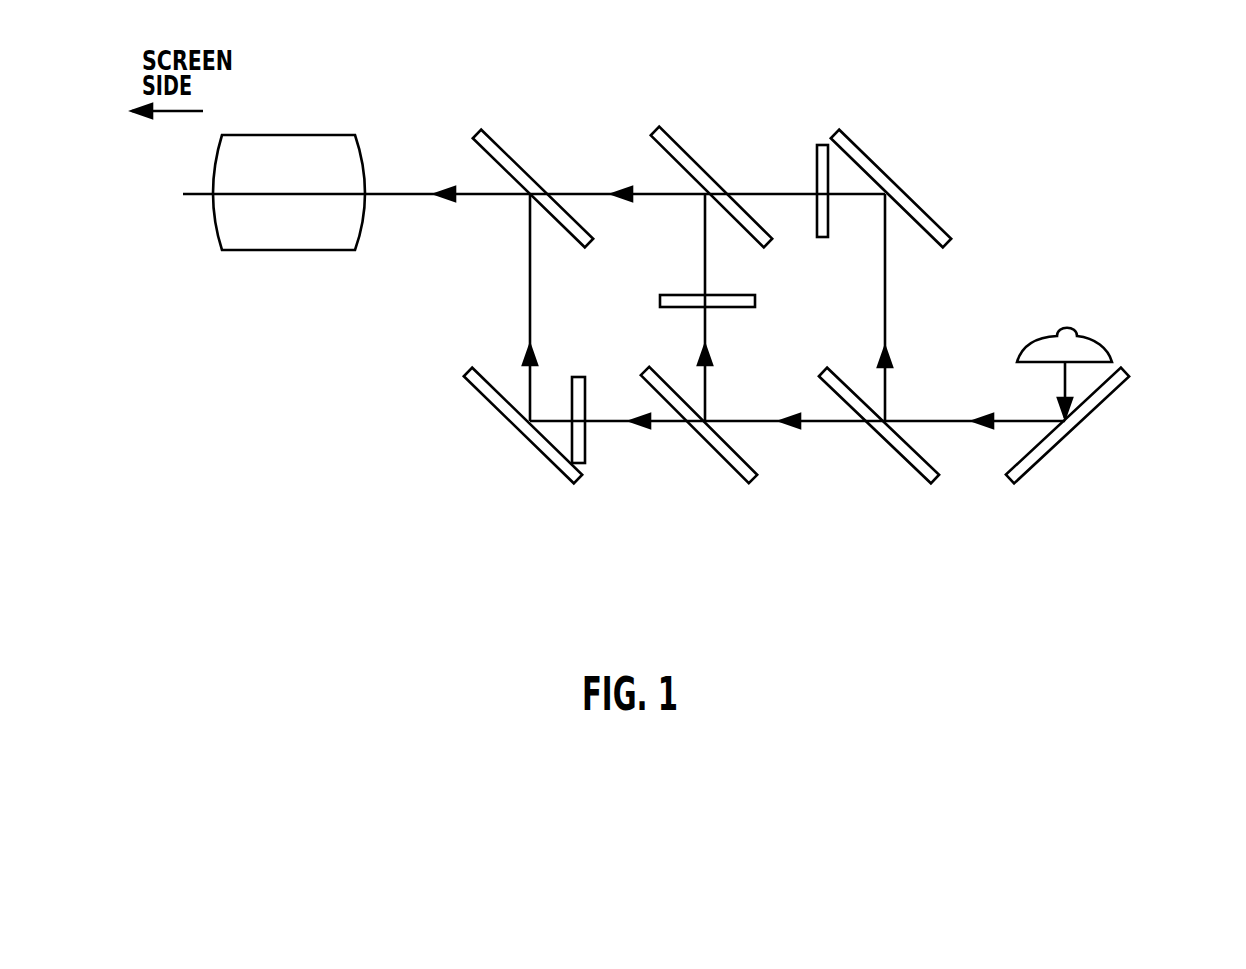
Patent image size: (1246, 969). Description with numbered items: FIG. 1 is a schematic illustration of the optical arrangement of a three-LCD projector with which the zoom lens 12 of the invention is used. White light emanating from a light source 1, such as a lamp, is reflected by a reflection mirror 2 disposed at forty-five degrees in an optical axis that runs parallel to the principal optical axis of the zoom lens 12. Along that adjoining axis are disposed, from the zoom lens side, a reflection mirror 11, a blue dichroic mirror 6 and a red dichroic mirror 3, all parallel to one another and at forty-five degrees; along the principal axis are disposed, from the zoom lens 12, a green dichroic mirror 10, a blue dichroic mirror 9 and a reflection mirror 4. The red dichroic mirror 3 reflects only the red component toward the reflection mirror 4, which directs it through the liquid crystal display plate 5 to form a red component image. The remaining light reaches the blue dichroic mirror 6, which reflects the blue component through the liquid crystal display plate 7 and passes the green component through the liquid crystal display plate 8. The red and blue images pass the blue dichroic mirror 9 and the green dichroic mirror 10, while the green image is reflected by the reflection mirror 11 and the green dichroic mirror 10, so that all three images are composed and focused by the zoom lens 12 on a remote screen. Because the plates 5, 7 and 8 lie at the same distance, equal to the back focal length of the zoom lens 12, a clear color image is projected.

The light source 1 is at (1100, 340).
The reflection mirror 2 is at (1115, 385).
The red dichroic mirror 3 is at (920, 478).
The reflection mirror 4 is at (873, 157).
The liquid crystal display plate 5 is at (824, 145).
The blue dichroic mirror 6 is at (745, 478).
The liquid crystal display plate 7 is at (735, 308).
The liquid crystal display plate 8 is at (577, 377).
The blue dichroic mirror 9 is at (672, 136).
The green dichroic mirror 10 is at (495, 140).
The reflection mirror 11 is at (565, 480).
The zoom lens 12 is at (262, 150).